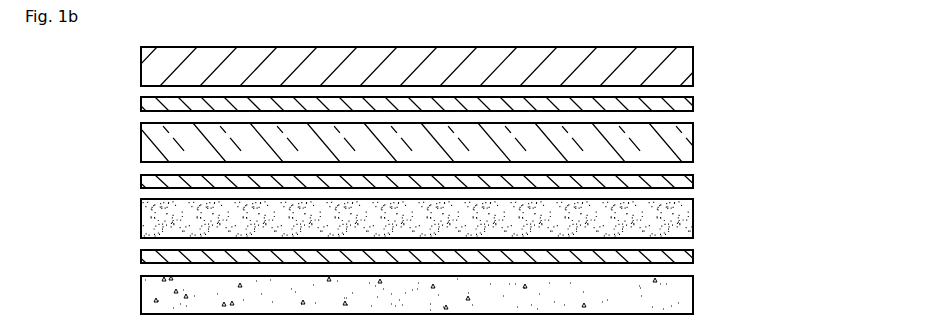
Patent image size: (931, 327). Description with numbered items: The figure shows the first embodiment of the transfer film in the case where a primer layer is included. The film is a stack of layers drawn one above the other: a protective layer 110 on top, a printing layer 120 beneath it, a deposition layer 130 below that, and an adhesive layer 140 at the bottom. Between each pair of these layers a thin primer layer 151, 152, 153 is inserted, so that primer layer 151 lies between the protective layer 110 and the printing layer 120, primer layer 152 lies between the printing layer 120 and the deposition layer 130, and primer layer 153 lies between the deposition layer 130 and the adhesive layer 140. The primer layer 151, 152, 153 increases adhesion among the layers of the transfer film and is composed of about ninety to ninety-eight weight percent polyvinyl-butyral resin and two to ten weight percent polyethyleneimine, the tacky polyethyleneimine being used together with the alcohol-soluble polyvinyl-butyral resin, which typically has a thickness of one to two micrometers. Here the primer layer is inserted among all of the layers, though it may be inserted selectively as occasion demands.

The protective layer 110 is at (141, 68).
The printing layer 120 is at (141, 140).
The deposition layer 130 is at (141, 217).
The adhesive layer 140 is at (141, 294).
The primer layer 151 is at (693, 103).
The primer layer 152 is at (693, 181).
The primer layer 153 is at (693, 257).